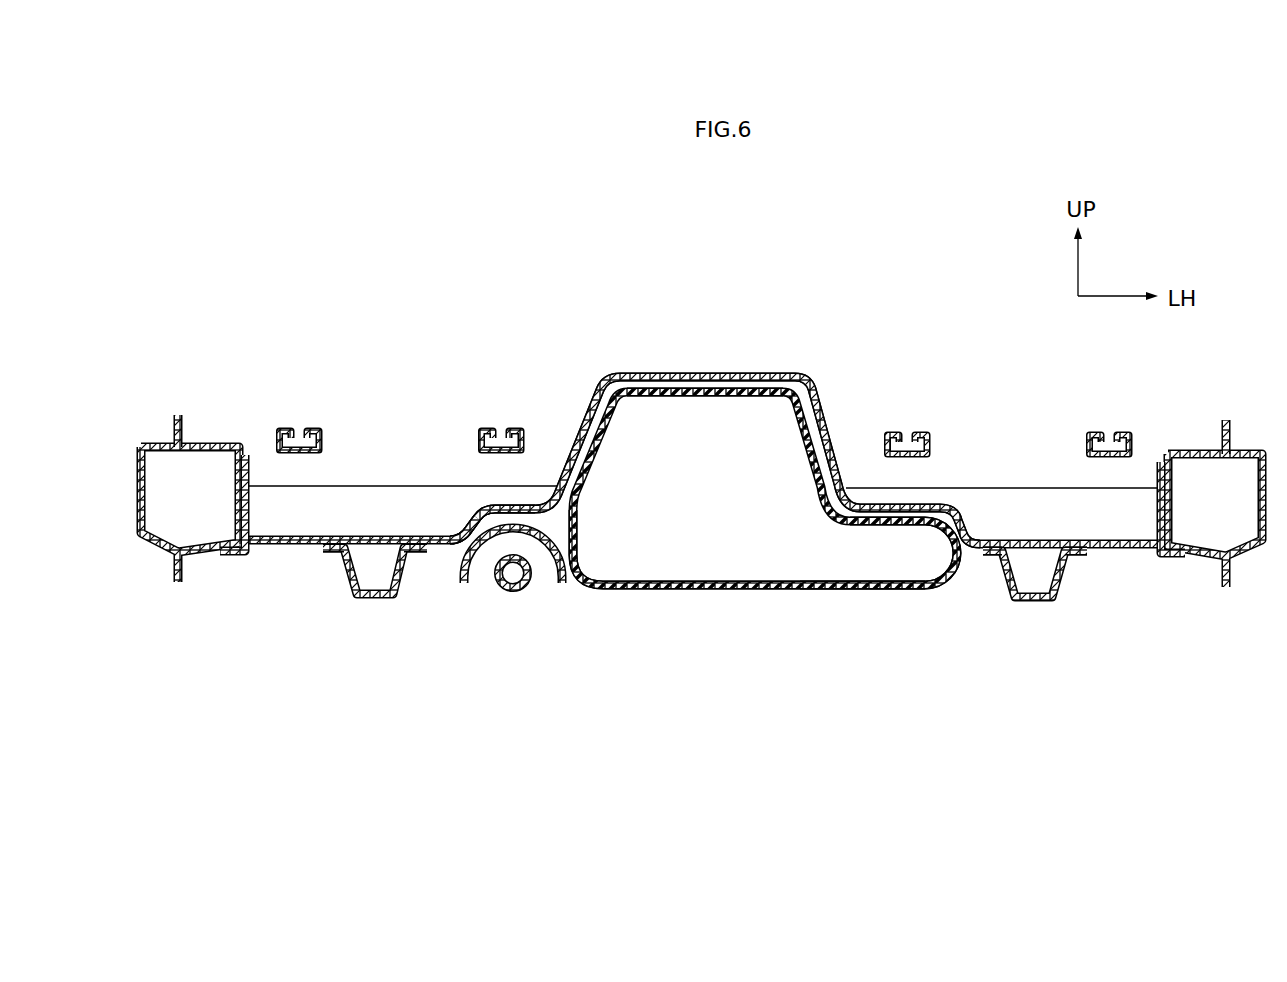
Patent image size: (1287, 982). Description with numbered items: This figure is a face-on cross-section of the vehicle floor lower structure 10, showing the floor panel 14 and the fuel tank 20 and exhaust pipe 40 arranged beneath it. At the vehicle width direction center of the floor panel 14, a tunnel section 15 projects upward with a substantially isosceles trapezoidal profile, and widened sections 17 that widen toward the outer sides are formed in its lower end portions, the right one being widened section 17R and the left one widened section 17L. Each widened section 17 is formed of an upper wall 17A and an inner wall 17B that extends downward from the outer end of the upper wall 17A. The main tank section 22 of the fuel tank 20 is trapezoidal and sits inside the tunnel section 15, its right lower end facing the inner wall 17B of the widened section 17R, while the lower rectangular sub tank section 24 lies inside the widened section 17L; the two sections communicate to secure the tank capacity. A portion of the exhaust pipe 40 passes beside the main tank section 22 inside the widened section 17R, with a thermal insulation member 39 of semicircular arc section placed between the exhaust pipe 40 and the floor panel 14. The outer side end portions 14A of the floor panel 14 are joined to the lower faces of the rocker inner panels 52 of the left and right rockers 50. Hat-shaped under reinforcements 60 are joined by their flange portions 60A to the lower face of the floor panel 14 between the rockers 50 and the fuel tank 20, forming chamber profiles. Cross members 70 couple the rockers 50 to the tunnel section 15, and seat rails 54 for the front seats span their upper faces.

The vehicle floor lower structure 10 is at (745, 617).
The floor panel 14 is at (577, 446).
The vehicle width direction outer side end portions 14A is at (239, 556).
The tunnel section 15 is at (735, 377).
The widened section 17 is at (765, 488).
The right side widened section 17R is at (493, 541).
The left side widened section 17L is at (937, 590).
The upper wall 17A is at (487, 513).
The inner wall 17B is at (482, 522).
The fuel tank 20 is at (663, 591).
The main tank section 22 is at (681, 388).
The sub tank section 24 is at (850, 590).
The thermal insulation member 39 is at (466, 588).
The exhaust pipe 40 is at (513, 593).
The rocker 50 is at (160, 445).
The rocker inner panel 52 is at (198, 444).
The seat rail 54 is at (500, 427).
The under reinforcement 60 is at (372, 599).
The flange portions 60A is at (337, 556).
The cross member 70 is at (264, 486).